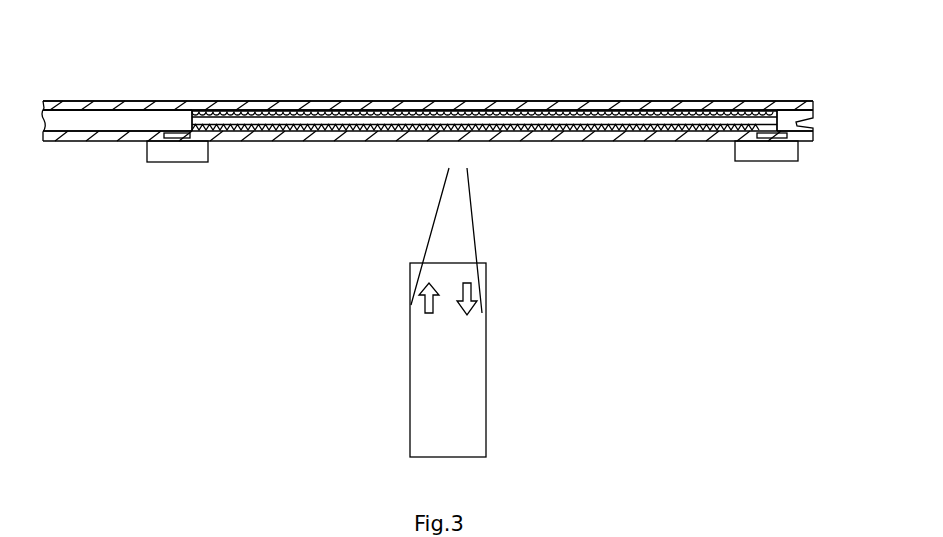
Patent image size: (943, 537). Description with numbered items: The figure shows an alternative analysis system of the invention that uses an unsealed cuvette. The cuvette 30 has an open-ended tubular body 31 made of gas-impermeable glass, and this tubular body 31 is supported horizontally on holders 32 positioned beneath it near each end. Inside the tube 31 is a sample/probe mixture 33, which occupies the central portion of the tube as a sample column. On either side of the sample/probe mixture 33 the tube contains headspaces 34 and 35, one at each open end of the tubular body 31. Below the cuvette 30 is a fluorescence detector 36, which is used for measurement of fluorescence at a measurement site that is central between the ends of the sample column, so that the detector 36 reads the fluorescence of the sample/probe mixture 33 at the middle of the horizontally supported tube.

The cuvette 30 is at (686, 91).
The tubular body 31 is at (343, 101).
The holders 32 is at (177, 158).
The sample/probe mixture 33 is at (505, 140).
The headspace 34 is at (118, 121).
The headspace 35 is at (793, 123).
The fluorescence detector 36 is at (369, 407).